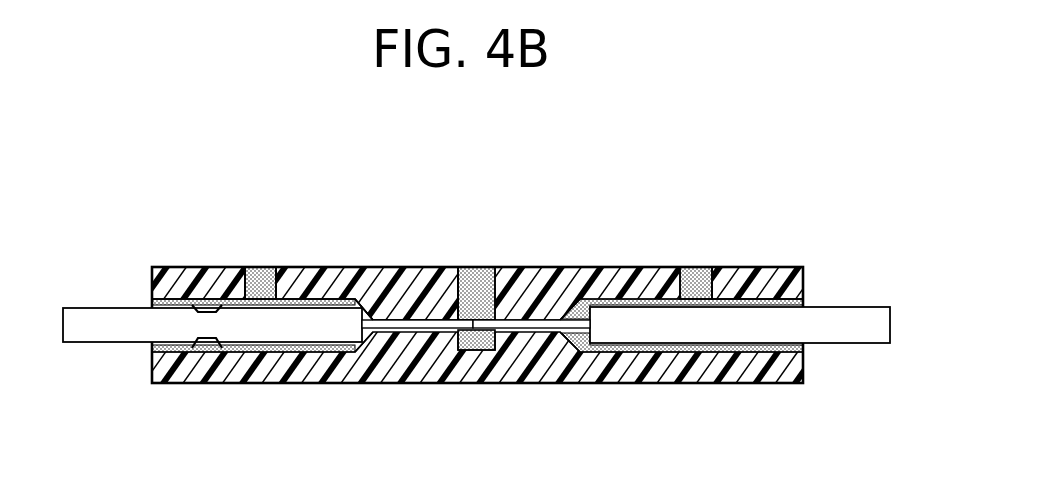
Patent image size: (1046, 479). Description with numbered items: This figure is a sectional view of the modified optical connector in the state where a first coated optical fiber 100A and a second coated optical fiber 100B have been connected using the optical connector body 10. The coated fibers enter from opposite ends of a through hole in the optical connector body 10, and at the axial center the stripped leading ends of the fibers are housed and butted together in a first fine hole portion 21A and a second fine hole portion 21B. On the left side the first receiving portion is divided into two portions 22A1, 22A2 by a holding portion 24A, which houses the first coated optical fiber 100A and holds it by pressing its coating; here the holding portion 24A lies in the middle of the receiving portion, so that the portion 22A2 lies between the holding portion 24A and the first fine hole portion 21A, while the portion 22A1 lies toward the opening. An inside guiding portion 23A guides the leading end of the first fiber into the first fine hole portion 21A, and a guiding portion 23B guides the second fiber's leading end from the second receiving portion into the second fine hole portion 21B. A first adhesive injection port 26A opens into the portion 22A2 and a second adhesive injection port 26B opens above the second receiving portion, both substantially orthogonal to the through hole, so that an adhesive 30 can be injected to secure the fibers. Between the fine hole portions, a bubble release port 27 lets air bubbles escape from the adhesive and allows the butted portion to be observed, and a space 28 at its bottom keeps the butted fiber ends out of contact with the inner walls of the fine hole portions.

The optical connector body 10 is at (570, 248).
The first fine hole portion 21A is at (440, 333).
The second fine hole portion 21B is at (535, 333).
The first portion of the first receiving portion 22A1 is at (172, 270).
The second portion of the first receiving portion 22A2 is at (315, 270).
The inside guiding portion 23A is at (365, 338).
The guiding portion 23B is at (548, 334).
The holding portion 24A is at (200, 346).
The first adhesive injection port 26A is at (245, 270).
The second adhesive injection port 26B is at (687, 267).
The bubble release port 27 is at (468, 267).
The space 28 is at (490, 351).
The adhesive 30 is at (710, 267).
The first coated optical fiber 100A is at (108, 345).
The second coated optical fiber 100B is at (843, 323).